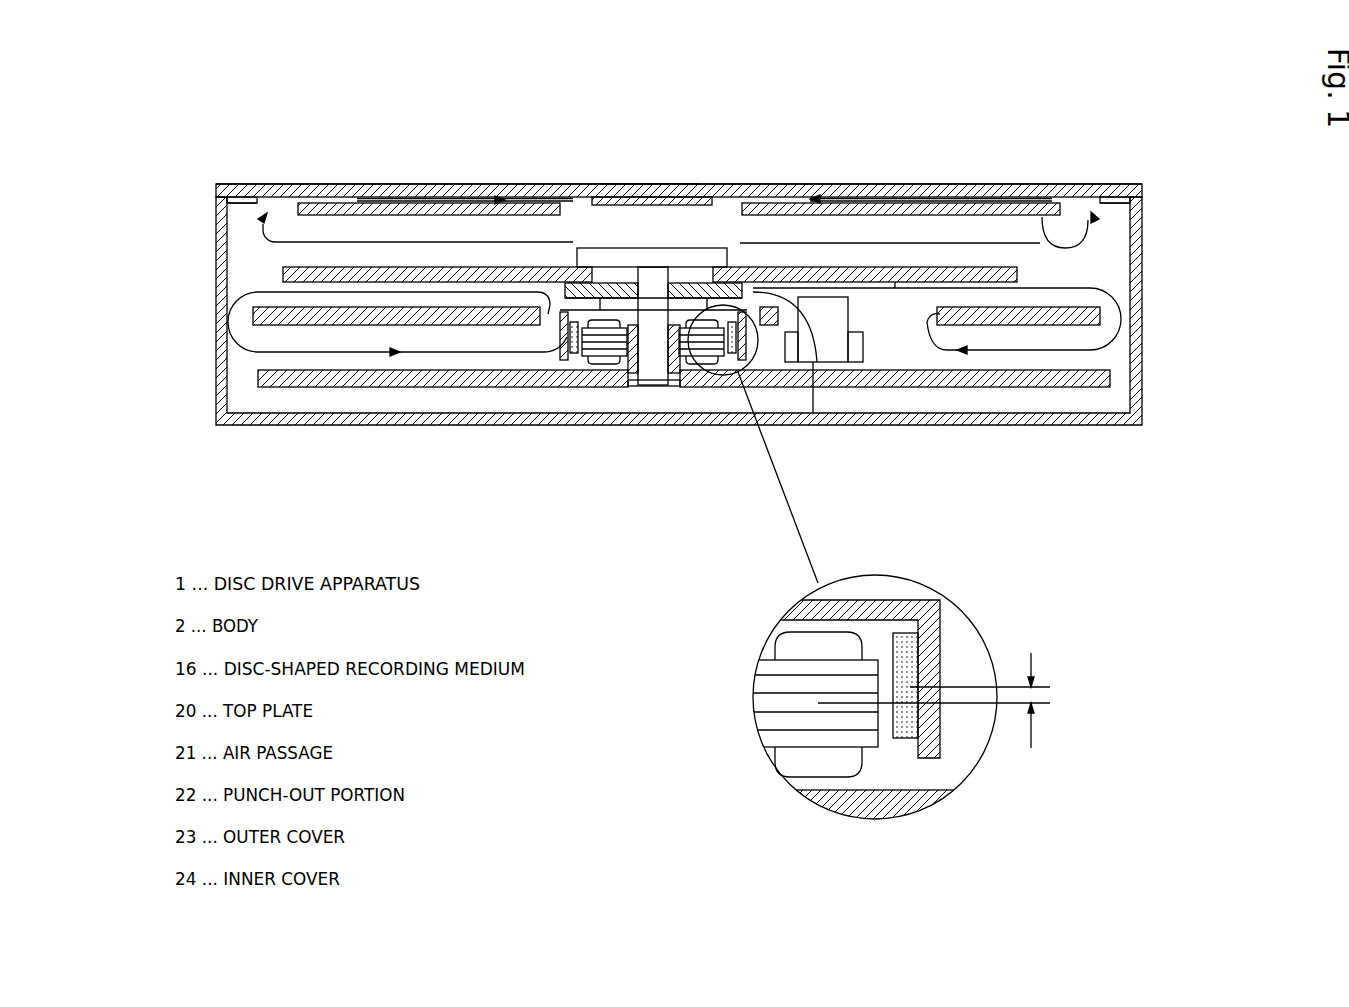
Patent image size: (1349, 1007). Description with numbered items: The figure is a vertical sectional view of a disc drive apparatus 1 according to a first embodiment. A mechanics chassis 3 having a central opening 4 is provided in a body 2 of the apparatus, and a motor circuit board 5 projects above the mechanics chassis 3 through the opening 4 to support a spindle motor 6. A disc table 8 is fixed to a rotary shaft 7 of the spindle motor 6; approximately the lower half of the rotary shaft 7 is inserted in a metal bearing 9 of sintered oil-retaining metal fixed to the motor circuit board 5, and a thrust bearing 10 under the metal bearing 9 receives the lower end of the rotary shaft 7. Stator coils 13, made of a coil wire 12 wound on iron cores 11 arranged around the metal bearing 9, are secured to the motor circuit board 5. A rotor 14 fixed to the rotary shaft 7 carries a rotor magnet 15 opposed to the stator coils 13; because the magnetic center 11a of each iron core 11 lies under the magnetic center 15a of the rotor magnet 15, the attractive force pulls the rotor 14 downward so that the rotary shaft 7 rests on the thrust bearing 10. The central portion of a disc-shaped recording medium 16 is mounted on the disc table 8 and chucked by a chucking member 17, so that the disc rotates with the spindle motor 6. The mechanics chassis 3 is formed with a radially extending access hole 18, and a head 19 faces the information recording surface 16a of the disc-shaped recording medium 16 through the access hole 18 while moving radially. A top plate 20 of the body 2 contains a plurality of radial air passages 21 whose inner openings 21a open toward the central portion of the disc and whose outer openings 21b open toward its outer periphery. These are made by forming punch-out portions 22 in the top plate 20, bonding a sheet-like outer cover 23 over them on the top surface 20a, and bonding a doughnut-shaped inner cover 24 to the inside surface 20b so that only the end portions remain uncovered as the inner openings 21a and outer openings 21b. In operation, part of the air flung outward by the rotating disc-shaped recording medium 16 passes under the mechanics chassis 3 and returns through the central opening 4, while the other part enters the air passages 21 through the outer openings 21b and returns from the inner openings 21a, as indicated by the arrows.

The disc drive apparatus 1 is at (666, 168).
The body 2 is at (325, 422).
The mechanics chassis 3 is at (1050, 327).
The opening 4 is at (548, 340).
The motor circuit board 5 is at (1012, 383).
The spindle motor 6 is at (562, 362).
The rotary shaft 7 is at (653, 387).
The disc table 8 is at (773, 327).
The metal bearing 9 is at (633, 373).
The thrust bearing 10 is at (674, 375).
The iron core 11 is at (600, 360).
The magnetic center of iron core 11a is at (1045, 707).
The coil wire 12 is at (700, 365).
The stator coils 13 is at (705, 325).
The rotor 14 is at (547, 357).
The rotor magnet 15 is at (735, 350).
The magnetic center of rotor magnet 15a is at (1045, 682).
The disc-shaped recording medium 16 is at (992, 262).
The information recording surface 16a is at (893, 288).
The chucking member 17 is at (745, 240).
The access hole 18 is at (925, 322).
The head 19 is at (847, 302).
The top plate 20 is at (703, 190).
The top surface 20a is at (640, 185).
The inside surface 20b is at (645, 207).
The air passage 21 is at (352, 197).
The inner opening 21a is at (573, 242).
The outer opening 21b is at (290, 185).
The punch-out portion 22 is at (507, 197).
The outer cover 23 is at (1052, 183).
The inner cover 24 is at (1127, 242).